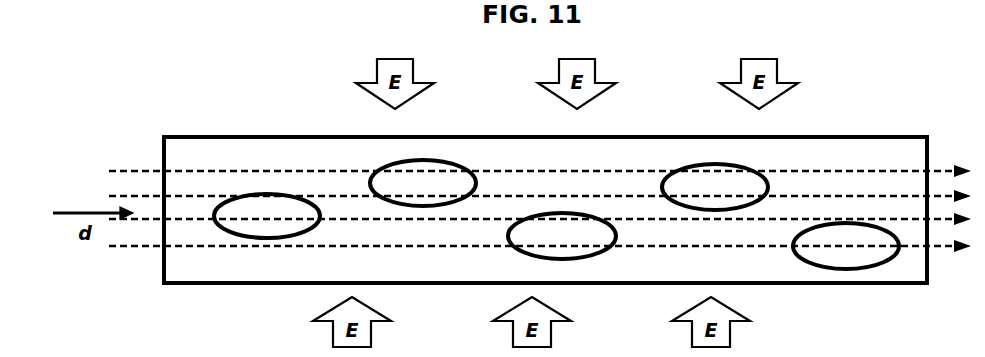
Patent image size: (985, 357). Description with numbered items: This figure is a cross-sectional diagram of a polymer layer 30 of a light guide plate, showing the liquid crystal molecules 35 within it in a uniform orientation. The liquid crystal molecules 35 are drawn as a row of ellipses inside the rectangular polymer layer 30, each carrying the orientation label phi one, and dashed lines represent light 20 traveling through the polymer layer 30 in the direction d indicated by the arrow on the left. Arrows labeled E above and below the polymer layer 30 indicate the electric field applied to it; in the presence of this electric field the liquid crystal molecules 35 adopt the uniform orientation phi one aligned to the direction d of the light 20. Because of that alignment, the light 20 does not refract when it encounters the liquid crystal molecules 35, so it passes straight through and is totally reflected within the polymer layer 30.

The light 20 is at (130, 163).
The polymer layer 30 is at (237, 137).
The liquid crystal molecules 35 is at (266, 182).